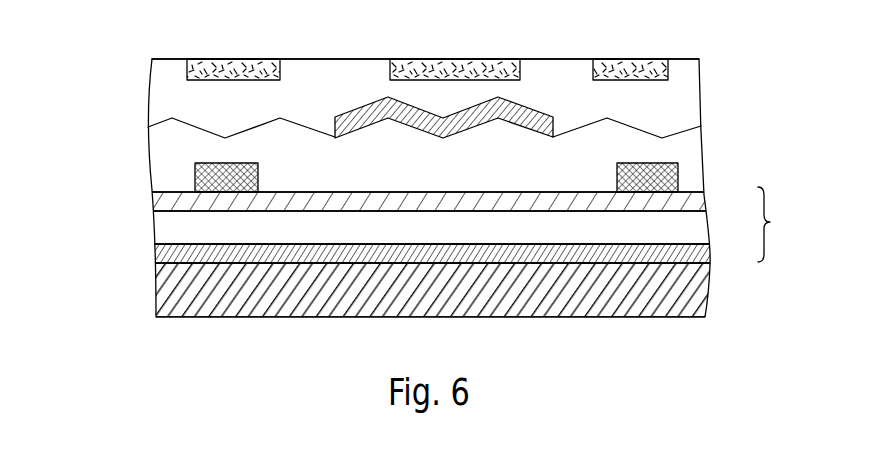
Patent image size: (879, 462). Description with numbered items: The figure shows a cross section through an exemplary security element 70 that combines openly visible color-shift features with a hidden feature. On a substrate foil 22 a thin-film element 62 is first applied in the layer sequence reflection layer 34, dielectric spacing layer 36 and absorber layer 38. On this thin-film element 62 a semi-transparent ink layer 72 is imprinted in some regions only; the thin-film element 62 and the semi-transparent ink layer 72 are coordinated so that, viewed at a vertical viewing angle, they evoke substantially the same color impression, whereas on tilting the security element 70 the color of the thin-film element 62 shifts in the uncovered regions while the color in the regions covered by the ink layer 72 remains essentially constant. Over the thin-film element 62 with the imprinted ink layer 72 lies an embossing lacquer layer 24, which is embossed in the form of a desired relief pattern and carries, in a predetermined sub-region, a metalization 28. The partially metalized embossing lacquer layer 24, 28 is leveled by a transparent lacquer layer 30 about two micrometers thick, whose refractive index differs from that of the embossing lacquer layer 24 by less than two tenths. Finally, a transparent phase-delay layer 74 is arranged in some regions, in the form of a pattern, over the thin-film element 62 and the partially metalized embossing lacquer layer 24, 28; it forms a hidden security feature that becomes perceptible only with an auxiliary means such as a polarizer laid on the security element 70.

The security element 70 is at (108, 54).
The substrate foil 22 is at (692, 292).
The reflection layer 34 is at (692, 252).
The dielectric spacing layer 36 is at (692, 225).
The absorber layer 38 is at (692, 202).
The thin-film element 62 is at (780, 224).
The semi-transparent ink layer 72 is at (670, 173).
The embossing lacquer layer 24 is at (163, 156).
The metalization 28 is at (533, 110).
The transparent phase-delay layer 74 is at (623, 68).
The transparent lacquer layer 30 is at (682, 100).